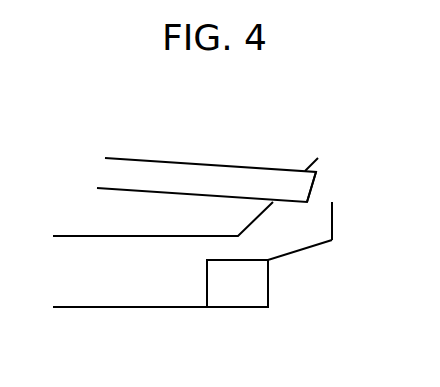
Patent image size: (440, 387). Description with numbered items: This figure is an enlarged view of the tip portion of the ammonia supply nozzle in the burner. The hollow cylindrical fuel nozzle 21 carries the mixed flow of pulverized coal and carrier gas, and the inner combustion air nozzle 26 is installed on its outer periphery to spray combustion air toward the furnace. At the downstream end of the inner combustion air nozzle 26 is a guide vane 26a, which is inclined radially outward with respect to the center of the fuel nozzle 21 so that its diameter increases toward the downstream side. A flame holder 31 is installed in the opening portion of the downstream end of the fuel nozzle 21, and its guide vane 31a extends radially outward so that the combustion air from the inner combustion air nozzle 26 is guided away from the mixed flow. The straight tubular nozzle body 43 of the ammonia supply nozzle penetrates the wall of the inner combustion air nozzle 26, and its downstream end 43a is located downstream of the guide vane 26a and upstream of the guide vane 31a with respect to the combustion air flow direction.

The fuel nozzle 21 is at (87, 305).
The inner combustion air nozzle 26 is at (140, 238).
The guide vane 26a is at (318, 160).
The flame holder 31 is at (338, 277).
The guide vane 31a is at (333, 210).
The nozzle body 43 is at (181, 172).
The downstream end 43a is at (316, 188).